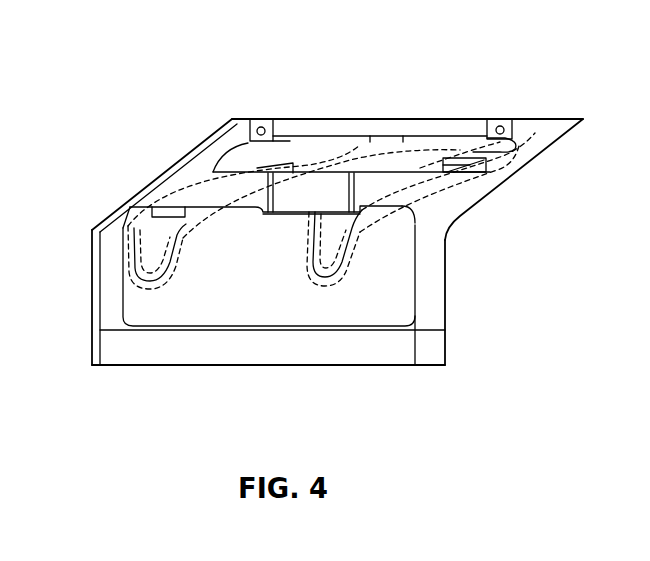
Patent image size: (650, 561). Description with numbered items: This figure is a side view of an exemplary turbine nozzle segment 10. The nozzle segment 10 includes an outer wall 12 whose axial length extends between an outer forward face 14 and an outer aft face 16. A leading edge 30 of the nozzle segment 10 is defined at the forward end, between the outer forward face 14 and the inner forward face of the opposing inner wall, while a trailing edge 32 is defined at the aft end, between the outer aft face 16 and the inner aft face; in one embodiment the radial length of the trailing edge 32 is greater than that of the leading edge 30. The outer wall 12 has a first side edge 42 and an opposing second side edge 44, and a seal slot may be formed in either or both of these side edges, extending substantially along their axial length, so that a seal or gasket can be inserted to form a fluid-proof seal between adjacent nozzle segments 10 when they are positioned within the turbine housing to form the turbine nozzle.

The nozzle segment 10 is at (204, 52).
The outer wall 12 is at (339, 353).
The outer forward face 14 is at (218, 364).
The outer aft face 16 is at (312, 120).
The leading edge 30 is at (302, 250).
The trailing edge 32 is at (532, 133).
The first side edge 42 is at (91, 304).
The second side edge 44 is at (447, 276).